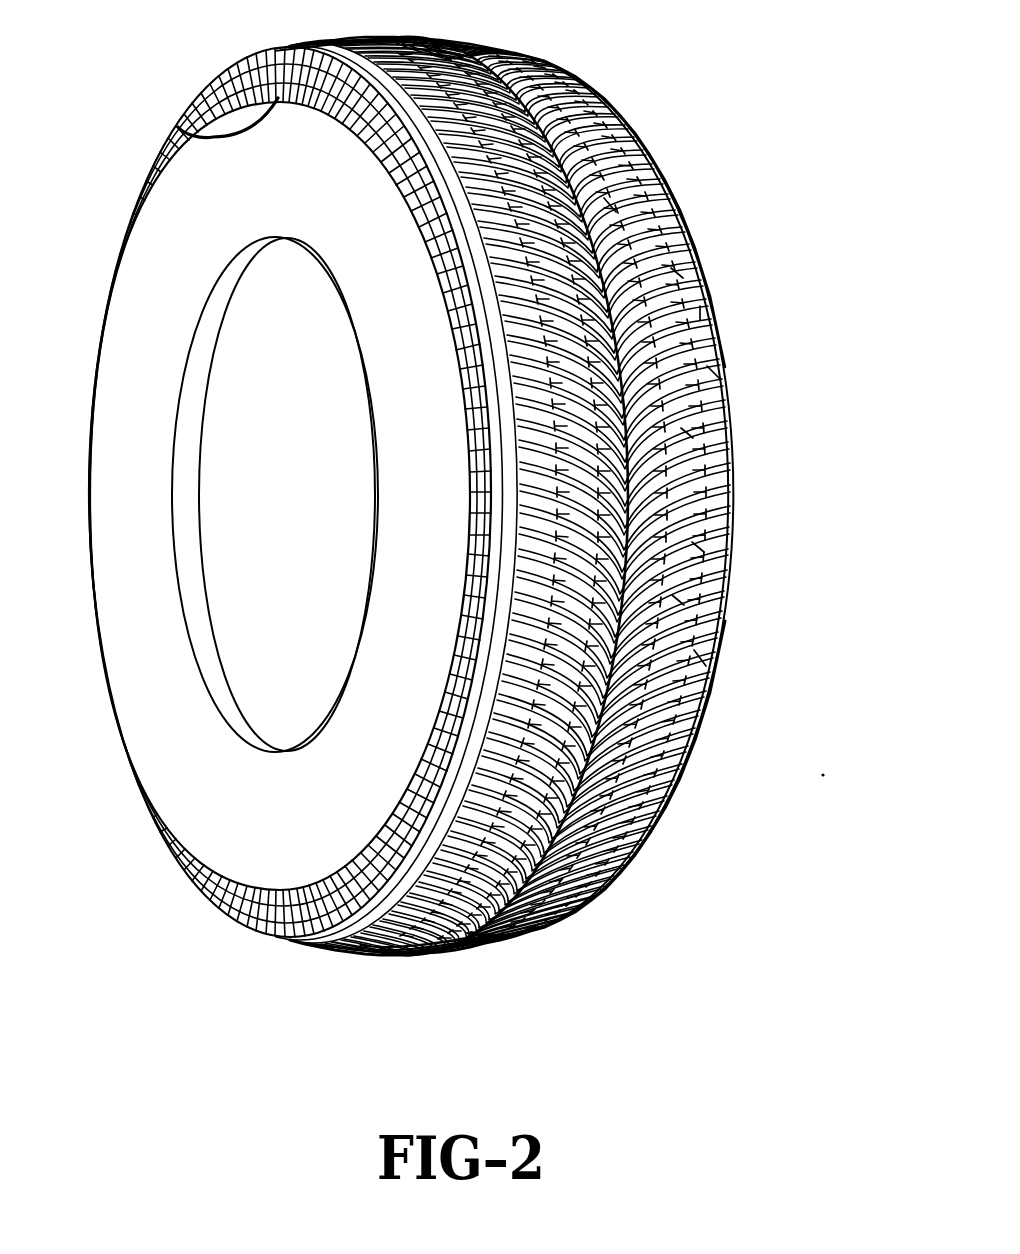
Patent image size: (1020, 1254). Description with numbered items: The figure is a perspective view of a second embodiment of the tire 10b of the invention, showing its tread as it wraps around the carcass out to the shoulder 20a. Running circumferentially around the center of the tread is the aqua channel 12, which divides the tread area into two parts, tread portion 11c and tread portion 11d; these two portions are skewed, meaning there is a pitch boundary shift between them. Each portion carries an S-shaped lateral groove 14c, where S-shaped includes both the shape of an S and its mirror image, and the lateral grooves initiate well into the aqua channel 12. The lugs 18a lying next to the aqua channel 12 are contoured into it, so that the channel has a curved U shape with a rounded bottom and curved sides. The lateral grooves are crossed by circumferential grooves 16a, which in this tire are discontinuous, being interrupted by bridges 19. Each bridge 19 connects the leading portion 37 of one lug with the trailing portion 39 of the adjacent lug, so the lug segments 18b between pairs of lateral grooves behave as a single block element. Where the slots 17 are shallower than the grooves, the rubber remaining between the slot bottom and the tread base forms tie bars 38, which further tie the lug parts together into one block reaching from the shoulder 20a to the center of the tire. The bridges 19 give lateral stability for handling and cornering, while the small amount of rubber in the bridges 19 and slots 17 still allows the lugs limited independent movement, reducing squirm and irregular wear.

The tire 10b is at (212, 985).
The tread portion 11c is at (397, 903).
The tread portion 11d is at (590, 903).
The aqua channel 12 is at (587, 777).
The S-shaped lateral groove 14c is at (700, 313).
The circumferential grooves 16a is at (677, 273).
The slots 17 is at (700, 658).
The lugs 18a is at (610, 205).
The lug segments 18b is at (678, 600).
The bridge 19 is at (698, 547).
The shoulder 20a is at (178, 127).
The leading portion 37 is at (687, 433).
The tie bars 38 is at (607, 351).
The trailing portion 39 is at (713, 372).